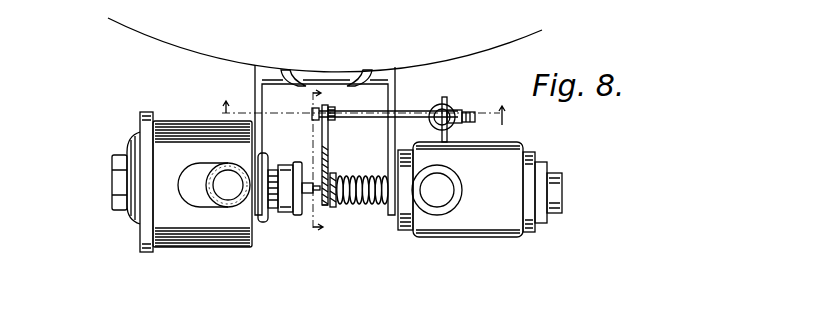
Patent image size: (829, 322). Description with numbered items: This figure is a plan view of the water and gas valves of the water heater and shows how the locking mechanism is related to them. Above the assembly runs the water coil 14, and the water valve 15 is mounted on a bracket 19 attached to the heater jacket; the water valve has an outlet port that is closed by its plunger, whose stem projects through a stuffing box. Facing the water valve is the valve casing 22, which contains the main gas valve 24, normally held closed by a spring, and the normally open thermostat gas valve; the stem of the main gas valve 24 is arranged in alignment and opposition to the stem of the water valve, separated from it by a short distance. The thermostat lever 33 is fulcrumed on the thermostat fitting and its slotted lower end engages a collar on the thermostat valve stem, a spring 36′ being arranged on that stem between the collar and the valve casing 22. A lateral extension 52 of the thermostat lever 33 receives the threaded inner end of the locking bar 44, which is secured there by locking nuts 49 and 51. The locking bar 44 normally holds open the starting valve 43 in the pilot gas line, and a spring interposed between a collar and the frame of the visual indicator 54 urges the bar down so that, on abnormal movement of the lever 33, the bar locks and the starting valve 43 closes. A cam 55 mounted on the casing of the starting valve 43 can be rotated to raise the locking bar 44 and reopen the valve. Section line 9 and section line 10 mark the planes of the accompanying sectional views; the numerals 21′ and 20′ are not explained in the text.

The water coil 14 is at (207, 54).
The bracket 19 is at (373, 77).
The section line 9— 9 is at (362, 114).
The section line 10— 10 is at (308, 163).
The water valve 15 is at (129, 221).
The nut 21′ is at (115, 197).
The coupling sleeve 20′ is at (303, 213).
The main gas valve 24 is at (316, 183).
The locking nut 51 is at (317, 119).
The lateral extension 52 is at (328, 125).
The locking nut 49 is at (336, 111).
The thermostat lever 33 is at (326, 204).
The spring 36′ is at (358, 176).
The valve casing 22 is at (503, 239).
The visual indicator 54 is at (418, 110).
The locking bar 44 is at (448, 108).
The starting valve 43 is at (453, 124).
The cam 55 is at (471, 115).